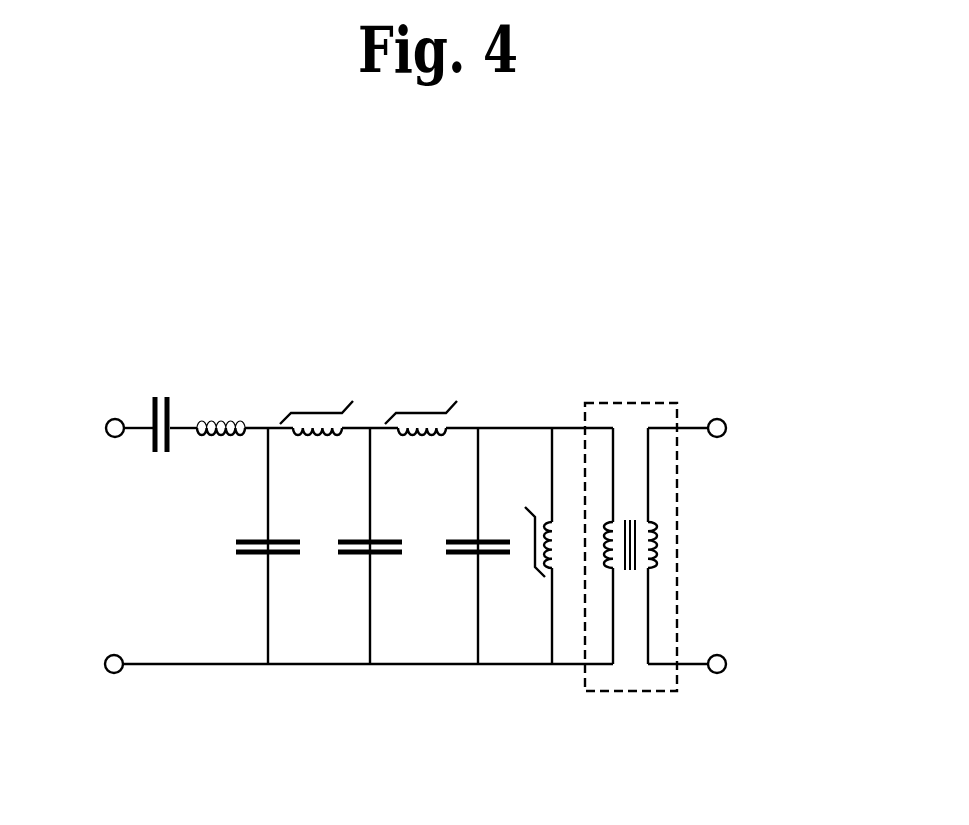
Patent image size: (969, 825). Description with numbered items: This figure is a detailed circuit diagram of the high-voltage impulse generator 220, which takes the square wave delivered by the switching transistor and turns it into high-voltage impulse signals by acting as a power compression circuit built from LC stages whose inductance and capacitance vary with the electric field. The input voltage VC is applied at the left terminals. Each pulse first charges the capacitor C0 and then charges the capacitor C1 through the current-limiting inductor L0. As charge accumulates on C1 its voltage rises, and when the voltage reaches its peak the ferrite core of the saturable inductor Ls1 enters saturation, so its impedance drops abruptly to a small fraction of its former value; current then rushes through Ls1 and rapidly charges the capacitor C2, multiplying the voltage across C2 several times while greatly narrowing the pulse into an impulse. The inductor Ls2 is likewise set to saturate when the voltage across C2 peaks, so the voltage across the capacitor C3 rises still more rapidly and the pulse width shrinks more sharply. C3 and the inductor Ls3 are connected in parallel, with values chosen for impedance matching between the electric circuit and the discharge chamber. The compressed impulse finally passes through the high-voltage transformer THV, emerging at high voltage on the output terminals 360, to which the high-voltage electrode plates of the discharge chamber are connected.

The high-voltage impulse generator 220 is at (420, 338).
The output terminals 360 is at (717, 655).
The capacitor C0 is at (157, 447).
The current-limiting inductor L0 is at (221, 409).
The saturable inductor Ls1 is at (316, 403).
The saturable inductor Ls2 is at (421, 403).
The inductor Ls3 is at (522, 546).
The capacitor C1 is at (255, 546).
The capacitor C2 is at (358, 546).
The capacitor C3 is at (465, 546).
The high-voltage transformer THV is at (635, 403).
The input voltage VC is at (317, 544).